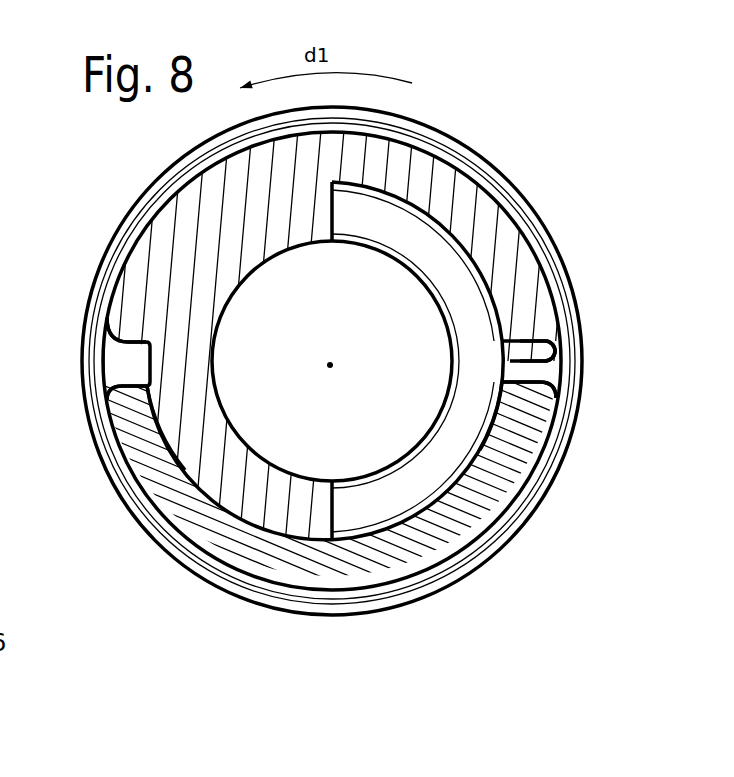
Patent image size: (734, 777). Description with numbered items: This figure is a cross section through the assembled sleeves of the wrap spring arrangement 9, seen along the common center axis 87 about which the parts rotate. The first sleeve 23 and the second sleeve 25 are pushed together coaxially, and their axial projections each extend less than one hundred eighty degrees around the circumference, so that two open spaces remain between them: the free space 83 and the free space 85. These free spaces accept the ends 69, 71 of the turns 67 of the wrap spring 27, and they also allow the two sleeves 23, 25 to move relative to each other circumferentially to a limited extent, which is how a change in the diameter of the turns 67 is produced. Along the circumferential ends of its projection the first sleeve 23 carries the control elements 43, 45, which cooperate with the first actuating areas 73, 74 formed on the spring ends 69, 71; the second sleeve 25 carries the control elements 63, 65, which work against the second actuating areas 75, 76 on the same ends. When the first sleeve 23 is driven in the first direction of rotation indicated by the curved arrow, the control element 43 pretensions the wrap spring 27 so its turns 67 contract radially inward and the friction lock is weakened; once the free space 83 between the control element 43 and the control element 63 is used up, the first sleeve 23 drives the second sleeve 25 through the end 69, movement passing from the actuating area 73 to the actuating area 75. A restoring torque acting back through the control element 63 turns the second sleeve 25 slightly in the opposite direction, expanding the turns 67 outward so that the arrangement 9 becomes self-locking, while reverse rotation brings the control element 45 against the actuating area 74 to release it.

The wrap spring arrangement 9 is at (514, 545).
The first sleeve 23 is at (197, 222).
The second sleeve 25 is at (282, 566).
The wrap spring 27 is at (460, 158).
The control element 43 is at (143, 335).
The control element 45 is at (520, 342).
The control element 63 is at (133, 455).
The control element 65 is at (508, 388).
The turns 67 is at (515, 213).
The end of the turns 69 is at (136, 425).
The end of the turns 71 is at (553, 362).
The first actuating area 73 is at (130, 338).
The first actuating area 74 is at (552, 345).
The second actuating area 75 is at (118, 398).
The second actuating area 76 is at (540, 378).
The free space 83 is at (120, 365).
The free space 85 is at (556, 373).
The center axis 87 is at (333, 366).